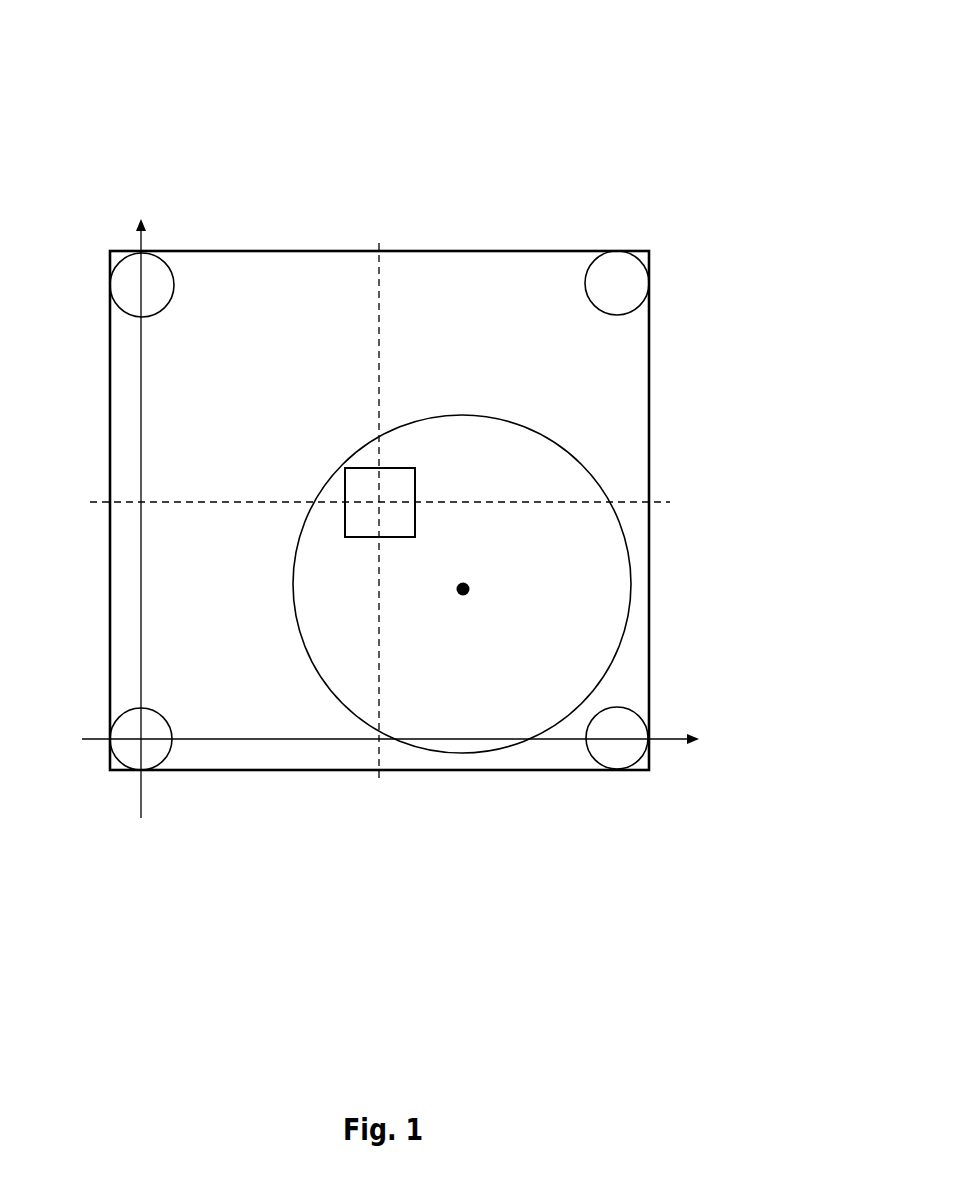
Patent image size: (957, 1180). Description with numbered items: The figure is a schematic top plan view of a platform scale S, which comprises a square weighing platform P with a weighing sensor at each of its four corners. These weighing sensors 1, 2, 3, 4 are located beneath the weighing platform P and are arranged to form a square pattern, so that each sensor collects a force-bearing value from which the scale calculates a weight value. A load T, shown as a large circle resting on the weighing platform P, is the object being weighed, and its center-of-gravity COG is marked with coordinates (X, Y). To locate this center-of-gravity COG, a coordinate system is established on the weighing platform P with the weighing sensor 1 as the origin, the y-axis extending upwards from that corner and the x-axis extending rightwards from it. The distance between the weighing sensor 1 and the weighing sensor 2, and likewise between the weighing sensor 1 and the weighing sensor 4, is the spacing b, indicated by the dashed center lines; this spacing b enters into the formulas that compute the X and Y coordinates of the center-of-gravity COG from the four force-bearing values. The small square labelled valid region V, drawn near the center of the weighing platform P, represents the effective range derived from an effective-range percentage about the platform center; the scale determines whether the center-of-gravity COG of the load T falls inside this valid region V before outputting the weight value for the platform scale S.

The weighing sensor 1 is at (167, 757).
The weighing sensor 2 is at (170, 270).
The weighing sensor 3 is at (589, 268).
The weighing sensor 4 is at (633, 710).
The platform scale S is at (515, 91).
The weighing platform P is at (650, 340).
The load T is at (588, 473).
The valid region V is at (345, 522).
The center-of-gravity COG is at (470, 588).
The distance between weighing sensors b is at (369, 531).
The element x-axis is at (426, 743).
The element y-axis is at (141, 501).